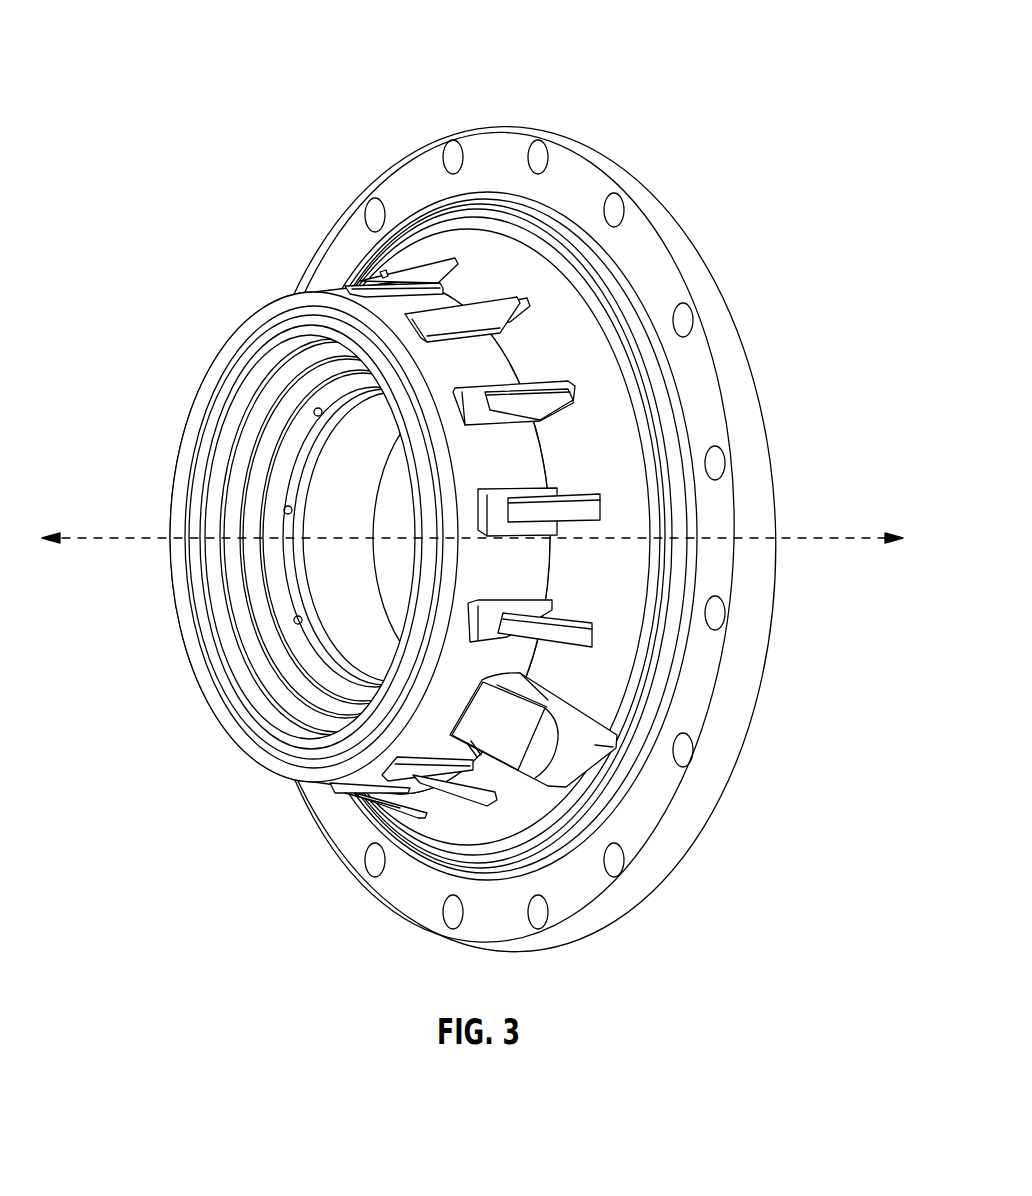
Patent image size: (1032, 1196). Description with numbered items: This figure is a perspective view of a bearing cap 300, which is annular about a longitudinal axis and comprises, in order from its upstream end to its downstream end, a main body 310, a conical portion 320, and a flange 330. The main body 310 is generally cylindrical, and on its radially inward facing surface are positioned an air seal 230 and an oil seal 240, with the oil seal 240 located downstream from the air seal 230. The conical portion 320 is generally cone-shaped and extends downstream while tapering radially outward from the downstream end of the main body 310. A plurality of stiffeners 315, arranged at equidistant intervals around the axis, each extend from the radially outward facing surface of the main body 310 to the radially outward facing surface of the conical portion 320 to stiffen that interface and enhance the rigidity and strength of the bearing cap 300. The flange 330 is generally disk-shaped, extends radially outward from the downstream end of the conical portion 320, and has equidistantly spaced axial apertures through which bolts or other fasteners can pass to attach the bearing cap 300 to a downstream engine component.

The bearing cap 300 is at (474, 482).
The main body 310 is at (368, 538).
The stiffener 315 is at (537, 398).
The conical portion 320 is at (642, 552).
The flange 330 is at (713, 418).
The air seal 230 is at (252, 470).
The oil seal 240 is at (327, 608).